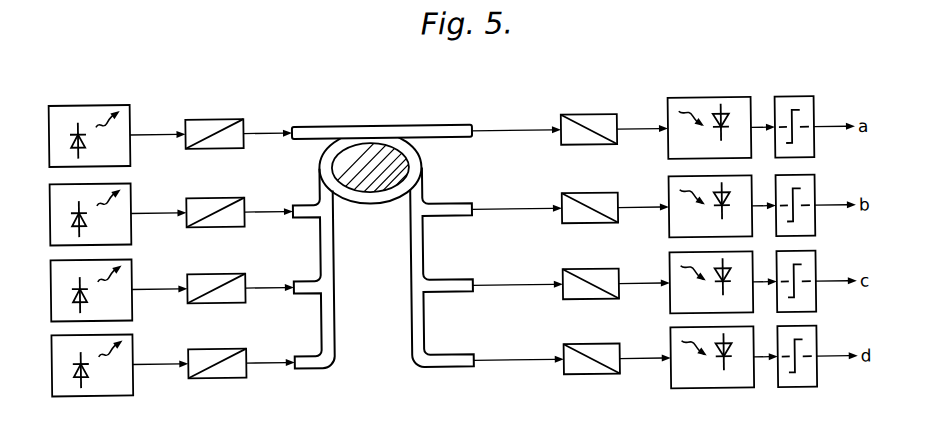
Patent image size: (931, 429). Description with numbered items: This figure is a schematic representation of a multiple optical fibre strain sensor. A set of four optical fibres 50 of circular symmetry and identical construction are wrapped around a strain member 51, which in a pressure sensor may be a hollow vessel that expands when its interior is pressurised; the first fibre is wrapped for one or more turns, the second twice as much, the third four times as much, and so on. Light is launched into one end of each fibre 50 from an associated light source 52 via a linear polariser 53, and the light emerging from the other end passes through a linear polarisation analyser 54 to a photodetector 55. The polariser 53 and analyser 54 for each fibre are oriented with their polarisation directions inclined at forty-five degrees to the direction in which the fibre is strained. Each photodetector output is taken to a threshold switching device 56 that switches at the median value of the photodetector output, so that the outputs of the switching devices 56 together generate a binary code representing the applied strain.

The optical fibres 50 is at (311, 129).
The strain member 51 is at (372, 148).
The light source 52 is at (110, 104).
The linear polariser 53 is at (210, 120).
The linear polarisation analyser 54 is at (580, 120).
The photodetector 55 is at (697, 104).
The threshold switching device 56 is at (794, 104).